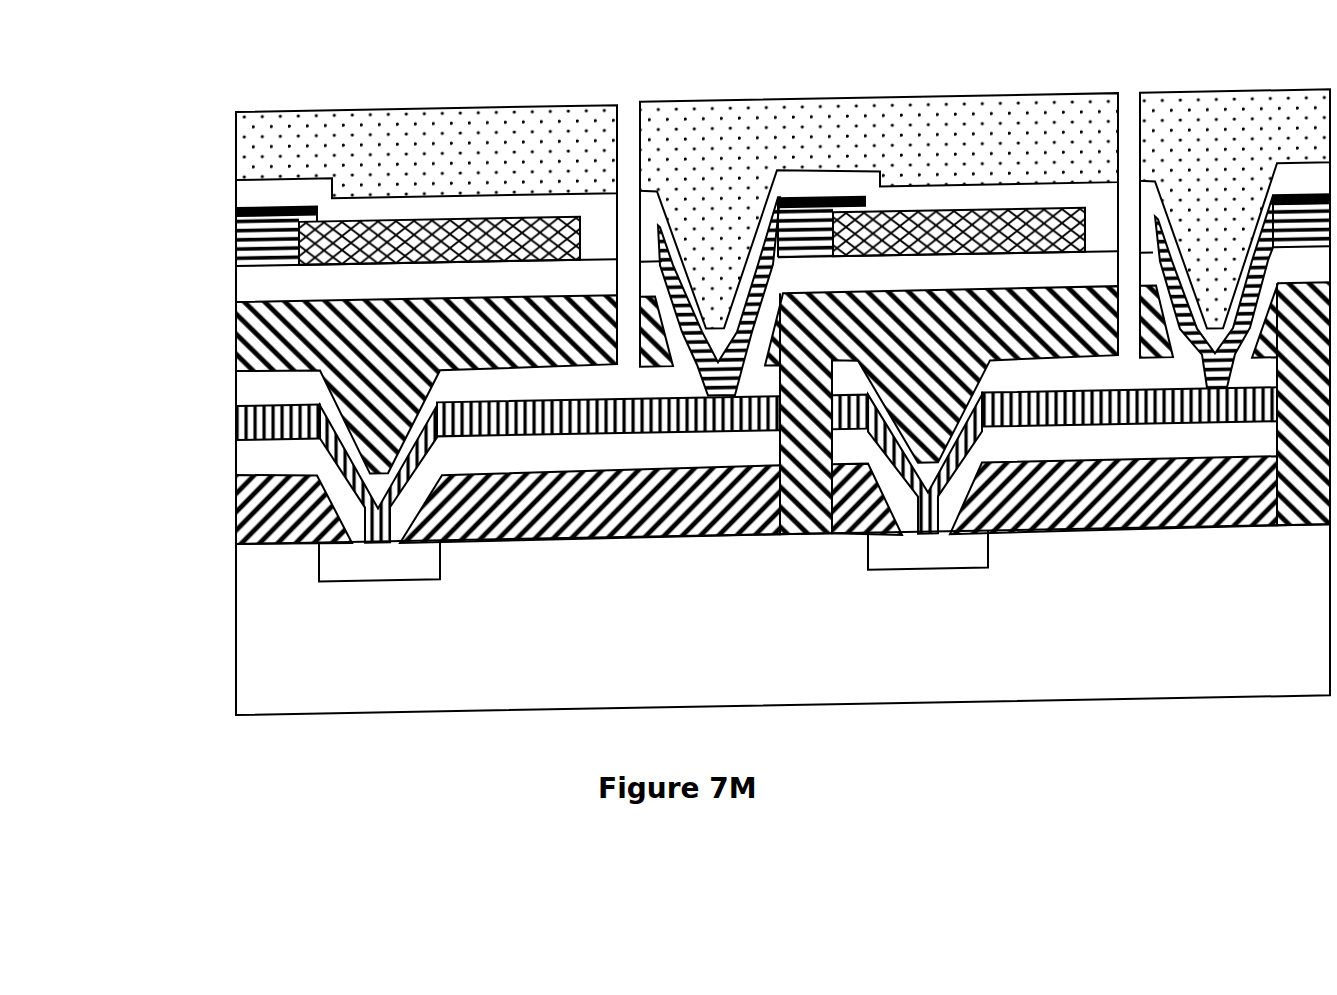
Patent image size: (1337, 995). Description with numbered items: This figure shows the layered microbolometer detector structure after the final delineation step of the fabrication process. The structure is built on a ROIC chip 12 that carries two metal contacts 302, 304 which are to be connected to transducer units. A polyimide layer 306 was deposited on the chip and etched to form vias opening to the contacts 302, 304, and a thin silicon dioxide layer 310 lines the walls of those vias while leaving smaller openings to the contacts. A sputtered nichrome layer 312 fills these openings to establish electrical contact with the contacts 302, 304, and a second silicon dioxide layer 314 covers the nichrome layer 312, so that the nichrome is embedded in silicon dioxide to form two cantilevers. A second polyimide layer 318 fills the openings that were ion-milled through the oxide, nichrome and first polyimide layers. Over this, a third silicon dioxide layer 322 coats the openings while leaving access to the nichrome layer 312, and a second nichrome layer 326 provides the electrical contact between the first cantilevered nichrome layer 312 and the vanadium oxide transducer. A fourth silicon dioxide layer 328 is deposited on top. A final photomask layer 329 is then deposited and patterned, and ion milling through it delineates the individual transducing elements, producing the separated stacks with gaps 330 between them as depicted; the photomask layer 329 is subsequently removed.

The ROIC chip 12 is at (1305, 701).
The metal contact 302 is at (424, 558).
The metal contact 304 is at (967, 559).
The polyimide layer 306 is at (265, 505).
The silicon dioxide layer 310 is at (265, 457).
The nichrome layer 312 is at (265, 423).
The second silicon dioxide layer 314 is at (265, 389).
The second polyimide layer 318 is at (262, 336).
The third silicon dioxide layer 322 is at (262, 285).
The second nichrome layer 326 is at (258, 243).
The fourth silicon dioxide layer 328 is at (258, 195).
The final photomask layer 329 is at (443, 87).
The opening 330 is at (626, 97).